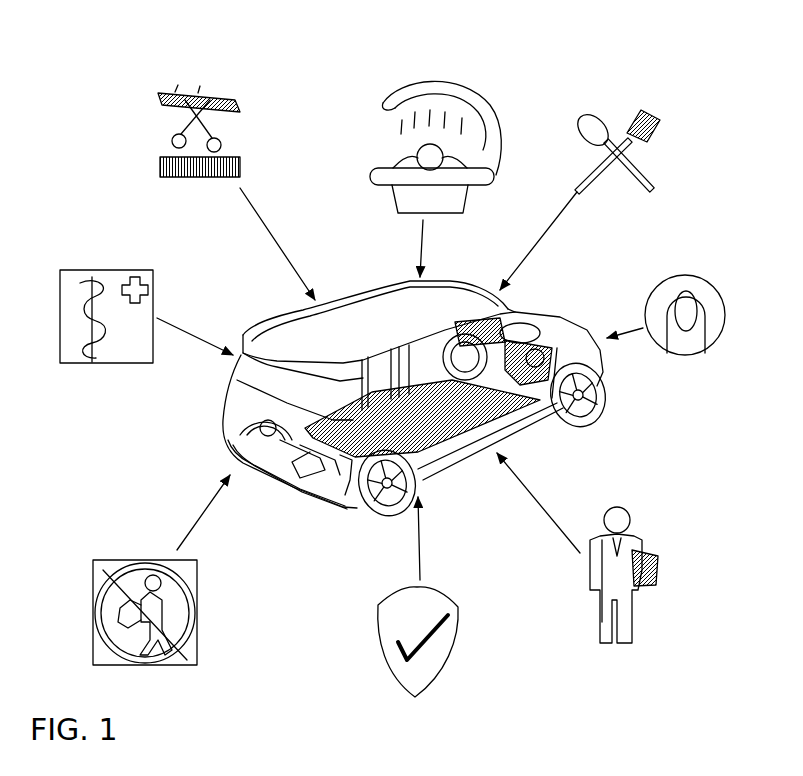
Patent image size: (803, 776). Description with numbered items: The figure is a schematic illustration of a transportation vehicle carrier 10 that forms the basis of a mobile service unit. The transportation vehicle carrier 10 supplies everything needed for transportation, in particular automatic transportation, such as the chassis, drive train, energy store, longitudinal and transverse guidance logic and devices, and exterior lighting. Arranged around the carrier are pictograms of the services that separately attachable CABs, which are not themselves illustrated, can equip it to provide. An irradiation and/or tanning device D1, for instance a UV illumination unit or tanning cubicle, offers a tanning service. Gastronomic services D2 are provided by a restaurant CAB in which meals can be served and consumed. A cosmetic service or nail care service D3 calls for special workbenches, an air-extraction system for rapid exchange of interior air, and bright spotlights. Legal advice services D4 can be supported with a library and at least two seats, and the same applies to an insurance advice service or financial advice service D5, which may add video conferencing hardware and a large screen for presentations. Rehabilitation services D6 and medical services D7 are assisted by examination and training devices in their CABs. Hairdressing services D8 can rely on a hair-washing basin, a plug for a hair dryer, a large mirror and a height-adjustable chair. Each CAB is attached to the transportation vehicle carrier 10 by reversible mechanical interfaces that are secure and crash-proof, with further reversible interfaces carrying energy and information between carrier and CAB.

The transportation vehicle carrier 10 is at (313, 507).
The irradiation and/or tanning device D1 is at (467, 93).
The gastronomic services D2 is at (642, 112).
The cosmetic service or nail care service D3 is at (697, 278).
The legal advice services D4 is at (637, 538).
The insurance advice service or financial advice service D5 is at (457, 617).
The rehabilitation services D6 is at (115, 563).
The medical services D7 is at (83, 273).
The hairdressing services D8 is at (218, 95).